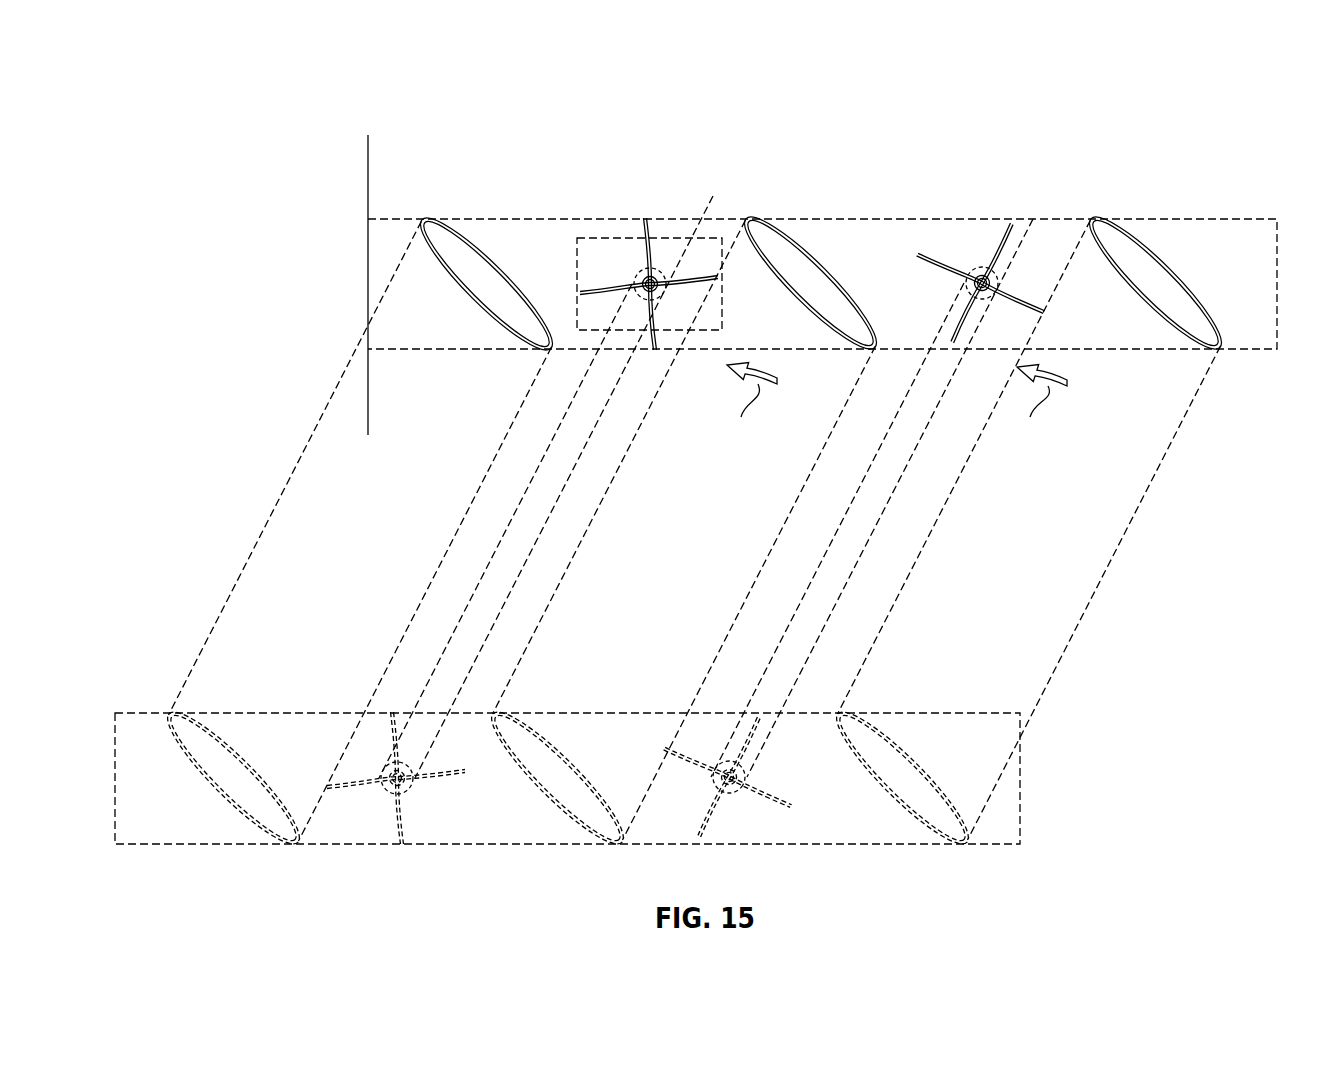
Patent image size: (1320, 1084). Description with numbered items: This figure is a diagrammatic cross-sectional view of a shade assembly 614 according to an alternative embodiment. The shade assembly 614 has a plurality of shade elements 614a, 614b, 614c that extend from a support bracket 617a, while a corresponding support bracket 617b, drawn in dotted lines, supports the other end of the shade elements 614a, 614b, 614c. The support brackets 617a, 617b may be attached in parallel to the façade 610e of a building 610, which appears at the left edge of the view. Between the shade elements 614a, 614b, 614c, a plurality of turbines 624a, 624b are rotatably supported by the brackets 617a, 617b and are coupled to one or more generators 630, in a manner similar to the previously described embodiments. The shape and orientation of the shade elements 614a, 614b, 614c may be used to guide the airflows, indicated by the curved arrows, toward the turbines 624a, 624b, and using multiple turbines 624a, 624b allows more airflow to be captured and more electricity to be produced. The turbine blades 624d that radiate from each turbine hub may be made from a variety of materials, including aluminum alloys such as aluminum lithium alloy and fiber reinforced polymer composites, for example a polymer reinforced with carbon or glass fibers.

The building 610 is at (314, 124).
The façade 610e is at (371, 413).
The shade assembly 614 is at (650, 191).
The shade element 614a is at (1122, 225).
The shade element 614b is at (775, 227).
The shade element 614c is at (447, 226).
The turbine 624a is at (966, 244).
The turbine 624b is at (630, 317).
The turbine blades 624d is at (1058, 172).
The generator 630 is at (655, 322).
The support bracket 617a is at (1247, 333).
The support bracket 617b is at (1012, 806).